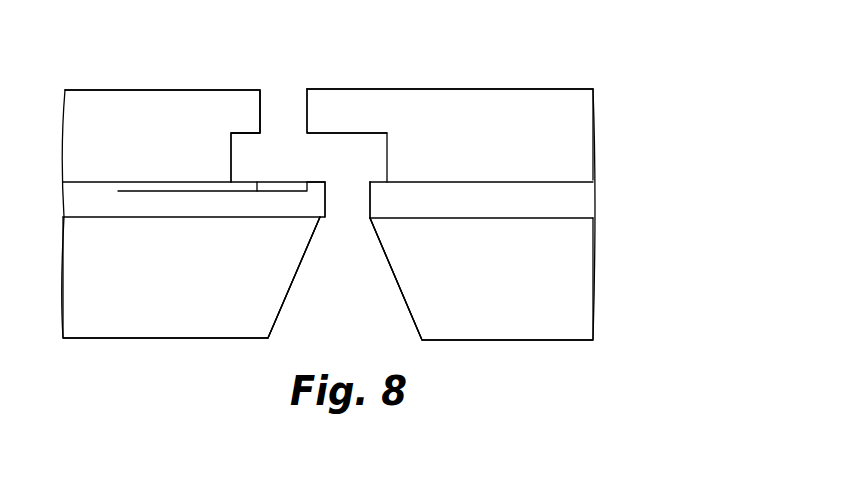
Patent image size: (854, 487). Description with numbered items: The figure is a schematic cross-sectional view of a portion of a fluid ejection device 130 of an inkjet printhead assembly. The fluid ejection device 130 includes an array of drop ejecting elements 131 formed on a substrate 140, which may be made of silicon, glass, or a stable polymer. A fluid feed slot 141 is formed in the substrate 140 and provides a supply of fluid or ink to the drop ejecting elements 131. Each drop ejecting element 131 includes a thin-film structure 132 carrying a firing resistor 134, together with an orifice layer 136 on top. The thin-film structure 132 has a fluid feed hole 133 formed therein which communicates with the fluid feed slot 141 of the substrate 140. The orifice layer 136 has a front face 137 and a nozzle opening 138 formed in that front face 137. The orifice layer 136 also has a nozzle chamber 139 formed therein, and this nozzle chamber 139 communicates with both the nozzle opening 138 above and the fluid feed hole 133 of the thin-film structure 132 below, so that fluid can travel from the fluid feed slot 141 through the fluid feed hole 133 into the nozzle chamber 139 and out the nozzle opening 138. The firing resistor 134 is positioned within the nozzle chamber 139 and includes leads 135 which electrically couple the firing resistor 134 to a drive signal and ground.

The fluid ejection device 130 is at (687, 67).
The drop ejecting element 131 is at (487, 73).
The thin-film structure 132 is at (617, 185).
The fluid feed hole 133 is at (343, 208).
The firing resistor 134 is at (262, 187).
The leads 135 is at (163, 191).
The orifice layer 136 is at (602, 89).
The front face 137 is at (192, 90).
The nozzle opening 138 is at (290, 98).
The nozzle chamber 139 is at (337, 173).
The substrate 140 is at (602, 220).
The fluid feed slot 141 is at (370, 295).